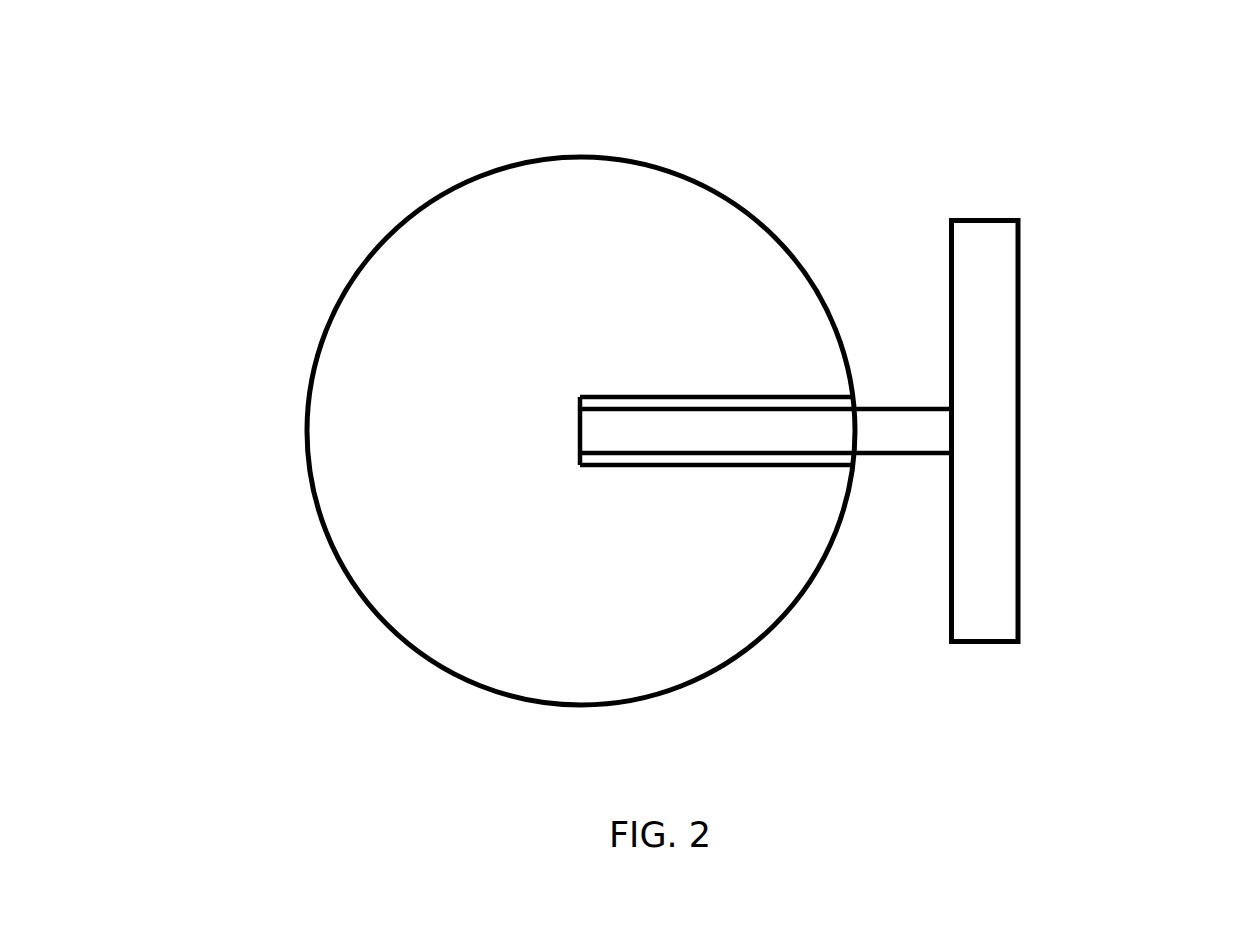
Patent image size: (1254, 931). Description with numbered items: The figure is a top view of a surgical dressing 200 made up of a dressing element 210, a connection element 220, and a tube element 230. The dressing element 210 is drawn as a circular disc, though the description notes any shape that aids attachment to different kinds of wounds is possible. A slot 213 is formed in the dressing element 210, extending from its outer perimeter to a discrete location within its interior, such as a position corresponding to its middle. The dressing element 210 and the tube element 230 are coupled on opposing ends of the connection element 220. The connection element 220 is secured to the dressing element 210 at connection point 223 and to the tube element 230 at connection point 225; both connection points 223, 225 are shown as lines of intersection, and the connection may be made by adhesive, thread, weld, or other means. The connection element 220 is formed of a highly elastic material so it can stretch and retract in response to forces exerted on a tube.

The surgical dressing 200 is at (455, 130).
The dressing element 210 is at (366, 395).
The slot 213 is at (630, 455).
The connection element 220 is at (875, 440).
The connection point 223 is at (582, 435).
The connection point 225 is at (950, 433).
The tube element 230 is at (980, 560).